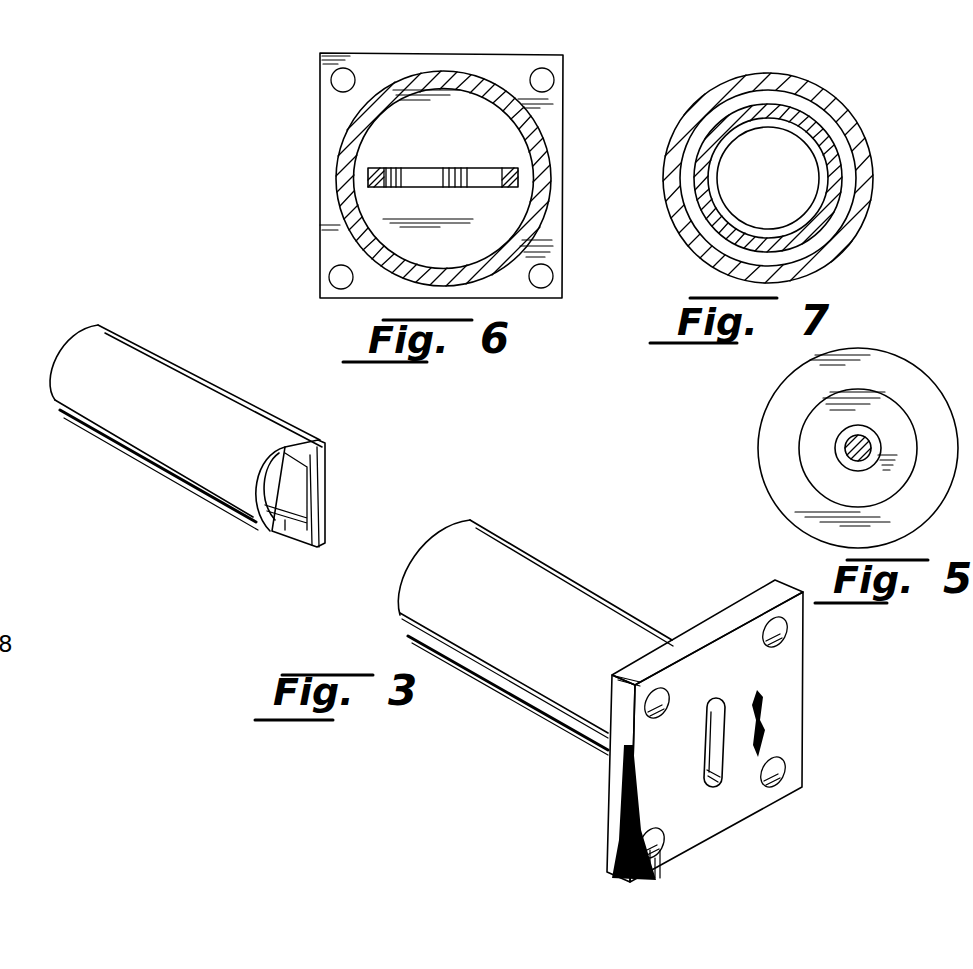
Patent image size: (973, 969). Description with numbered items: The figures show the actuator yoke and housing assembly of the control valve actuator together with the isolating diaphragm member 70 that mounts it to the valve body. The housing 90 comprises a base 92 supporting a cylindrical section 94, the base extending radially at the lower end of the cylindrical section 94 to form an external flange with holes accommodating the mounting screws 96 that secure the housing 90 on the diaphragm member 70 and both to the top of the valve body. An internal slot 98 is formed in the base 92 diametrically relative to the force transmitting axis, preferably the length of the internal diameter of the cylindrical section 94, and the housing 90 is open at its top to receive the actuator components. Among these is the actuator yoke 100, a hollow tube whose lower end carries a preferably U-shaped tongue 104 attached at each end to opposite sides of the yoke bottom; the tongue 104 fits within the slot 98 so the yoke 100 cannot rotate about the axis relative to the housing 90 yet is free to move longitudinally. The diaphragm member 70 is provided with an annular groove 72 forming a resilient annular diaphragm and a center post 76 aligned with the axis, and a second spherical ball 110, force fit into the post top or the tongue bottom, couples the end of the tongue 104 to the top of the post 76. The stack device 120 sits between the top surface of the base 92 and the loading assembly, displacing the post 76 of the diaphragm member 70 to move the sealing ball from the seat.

In FIG. 5, the isolating diaphragm member 70 is at (926, 368).
In FIG. 5, the annular groove 72 is at (813, 437).
In FIG. 5, the center post 76 is at (875, 438).
In FIG. 5, the second spherical ball 110 is at (840, 438).
In FIG. 6, the housing 90 is at (334, 175).
In FIG. 7, the housing 90 is at (876, 151).
In FIG. 3, the housing 90 is at (525, 540).
In FIG. 6, the base 92 is at (557, 128).
In FIG. 3, the base 92 is at (774, 588).
In FIG. 6, the cylindrical section 94 is at (465, 82).
In FIG. 3, the cylindrical section 94 is at (578, 605).
In FIG. 6, the mounting screws 96 is at (541, 72).
In FIG. 6, the internal slot 98 is at (477, 173).
In FIG. 3, the internal slot 98 is at (711, 745).
In FIG. 7, the actuator yoke 100 is at (830, 125).
In FIG. 3, the actuator yoke 100 is at (248, 398).
In FIG. 6, the tongue 104 is at (377, 187).
In FIG. 3, the tongue 104 is at (323, 470).
In FIG. 7, the device 120 is at (795, 190).